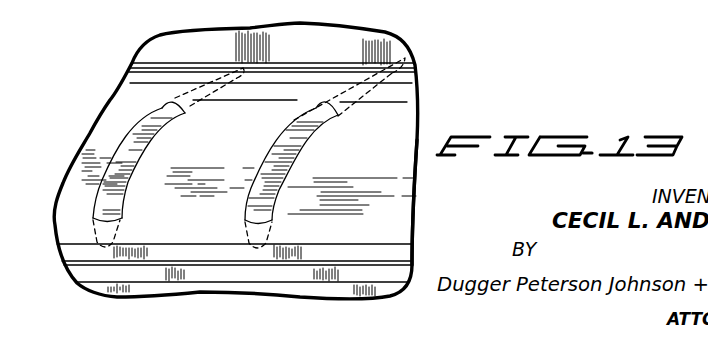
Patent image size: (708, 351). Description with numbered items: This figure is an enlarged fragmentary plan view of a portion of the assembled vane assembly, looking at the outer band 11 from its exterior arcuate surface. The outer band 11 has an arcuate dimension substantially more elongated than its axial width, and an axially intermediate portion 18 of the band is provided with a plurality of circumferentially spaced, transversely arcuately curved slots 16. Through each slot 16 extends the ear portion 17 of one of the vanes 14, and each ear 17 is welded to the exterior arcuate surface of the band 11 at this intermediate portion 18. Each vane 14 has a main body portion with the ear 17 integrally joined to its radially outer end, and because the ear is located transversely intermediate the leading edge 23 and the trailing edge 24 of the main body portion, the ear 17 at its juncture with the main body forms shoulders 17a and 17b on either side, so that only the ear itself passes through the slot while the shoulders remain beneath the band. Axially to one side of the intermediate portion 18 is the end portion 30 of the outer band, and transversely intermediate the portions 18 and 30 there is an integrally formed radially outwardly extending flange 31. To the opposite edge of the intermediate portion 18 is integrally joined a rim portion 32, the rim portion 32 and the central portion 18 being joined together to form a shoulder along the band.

The outer band 11 is at (428, 106).
The vanes 14 is at (148, 166).
The slots 16 is at (162, 108).
The ear portion 17 is at (283, 161).
The shoulder 17a is at (221, 114).
The shoulder 17b is at (122, 219).
The axially intermediate portion 18 is at (410, 189).
The leading edge 23 is at (268, 249).
The trailing edge 24 is at (405, 58).
The end portion 30 is at (364, 297).
The flange 31 is at (411, 274).
The rim portion 32 is at (313, 40).